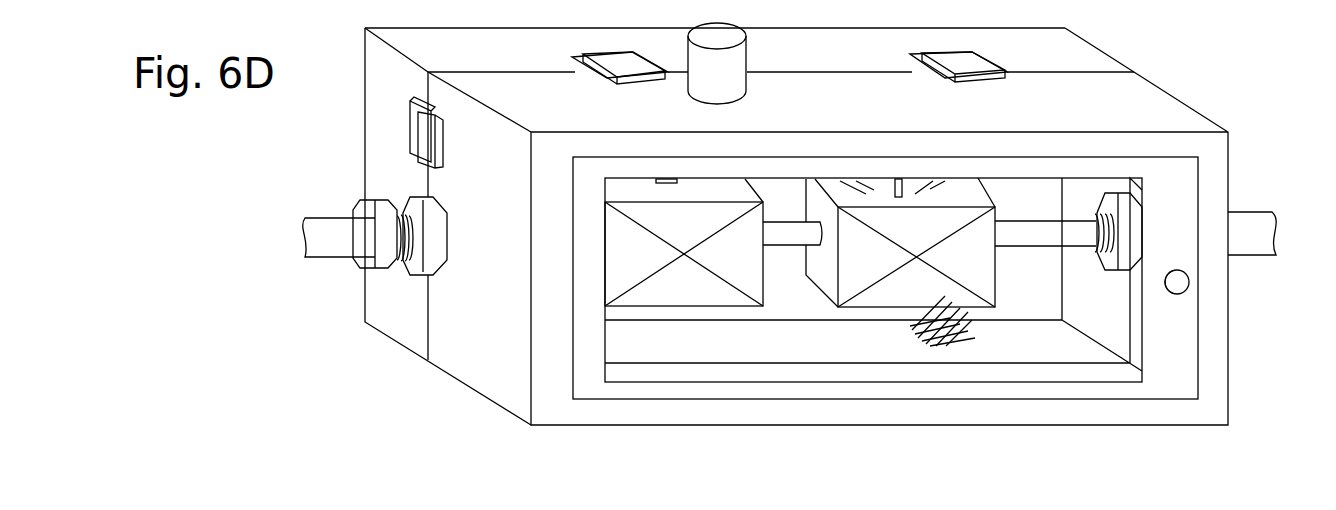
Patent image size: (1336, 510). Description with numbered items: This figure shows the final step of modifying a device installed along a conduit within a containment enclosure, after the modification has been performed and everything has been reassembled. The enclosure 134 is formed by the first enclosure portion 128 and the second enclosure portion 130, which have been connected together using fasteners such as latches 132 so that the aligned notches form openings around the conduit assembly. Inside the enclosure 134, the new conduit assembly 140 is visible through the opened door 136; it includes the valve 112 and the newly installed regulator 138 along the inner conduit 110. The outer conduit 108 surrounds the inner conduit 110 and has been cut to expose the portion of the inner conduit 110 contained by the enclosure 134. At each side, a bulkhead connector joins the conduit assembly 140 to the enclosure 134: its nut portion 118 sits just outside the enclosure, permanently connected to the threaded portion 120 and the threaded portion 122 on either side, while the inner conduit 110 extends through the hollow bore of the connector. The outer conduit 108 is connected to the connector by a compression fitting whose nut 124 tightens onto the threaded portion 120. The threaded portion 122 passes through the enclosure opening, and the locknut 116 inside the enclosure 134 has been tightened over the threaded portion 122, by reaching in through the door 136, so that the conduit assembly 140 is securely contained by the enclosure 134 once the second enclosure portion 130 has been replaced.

The outer conduit 108 is at (322, 228).
The inner conduit 110 is at (1053, 233).
The valve 112 is at (697, 298).
The locknut 116 is at (1118, 270).
The nut portion 118 is at (430, 264).
The threaded portion 120 is at (403, 212).
The threaded portion 122 is at (1090, 218).
The nut 124 is at (354, 272).
The first enclosure portion 128 is at (1082, 55).
The second enclosure portion 130 is at (1147, 95).
The latch 132 is at (955, 57).
The enclosure 134 is at (1242, 72).
The door 136 is at (1178, 333).
The regulator 138 is at (930, 300).
The conduit assembly 140 is at (790, 270).